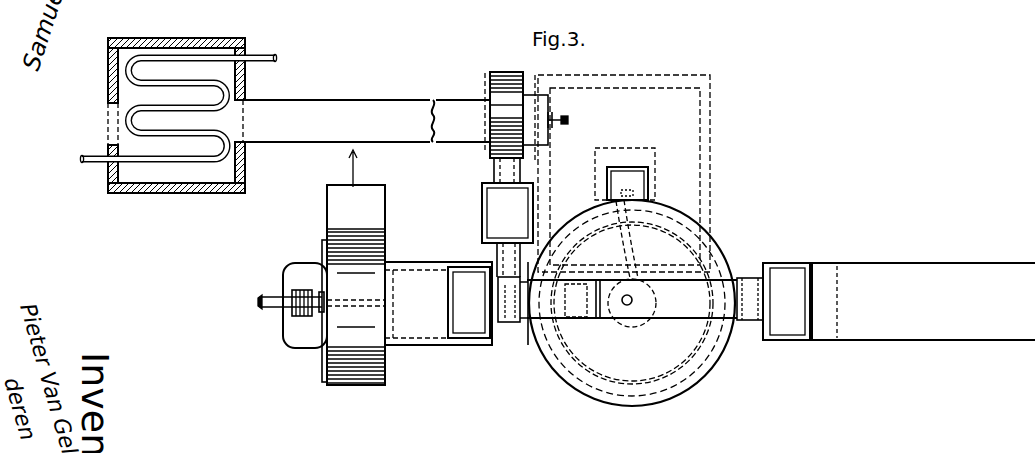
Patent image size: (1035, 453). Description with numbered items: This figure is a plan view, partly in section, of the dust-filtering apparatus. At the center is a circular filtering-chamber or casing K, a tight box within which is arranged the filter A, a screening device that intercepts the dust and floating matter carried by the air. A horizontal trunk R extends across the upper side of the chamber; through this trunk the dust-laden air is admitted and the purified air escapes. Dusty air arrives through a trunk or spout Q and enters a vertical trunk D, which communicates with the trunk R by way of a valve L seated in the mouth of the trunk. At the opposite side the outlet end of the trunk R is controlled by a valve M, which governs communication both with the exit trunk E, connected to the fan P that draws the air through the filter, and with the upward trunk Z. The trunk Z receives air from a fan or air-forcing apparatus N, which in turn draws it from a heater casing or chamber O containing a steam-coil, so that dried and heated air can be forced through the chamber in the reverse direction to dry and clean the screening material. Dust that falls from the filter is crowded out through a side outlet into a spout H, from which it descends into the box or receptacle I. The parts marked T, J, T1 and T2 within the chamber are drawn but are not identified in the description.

The heater casing or chamber O is at (93, 131).
The fan or air-forcing apparatus N is at (506, 106).
The upward trunk Z is at (507, 213).
The fan P is at (353, 285).
The exit trunk E is at (469, 302).
The valves M is at (509, 299).
The box or receptacle I is at (624, 173).
The spout H is at (625, 174).
The filter A is at (632, 303).
The box or casing K is at (716, 356).
The trunk R is at (632, 303).
The hub pin T is at (632, 303).
The slot J is at (642, 258).
The block T1 is at (576, 300).
The bar T2 is at (599, 320).
The valves L is at (750, 299).
The vertical trunk D is at (786, 301).
The trunk or spout Q is at (922, 301).